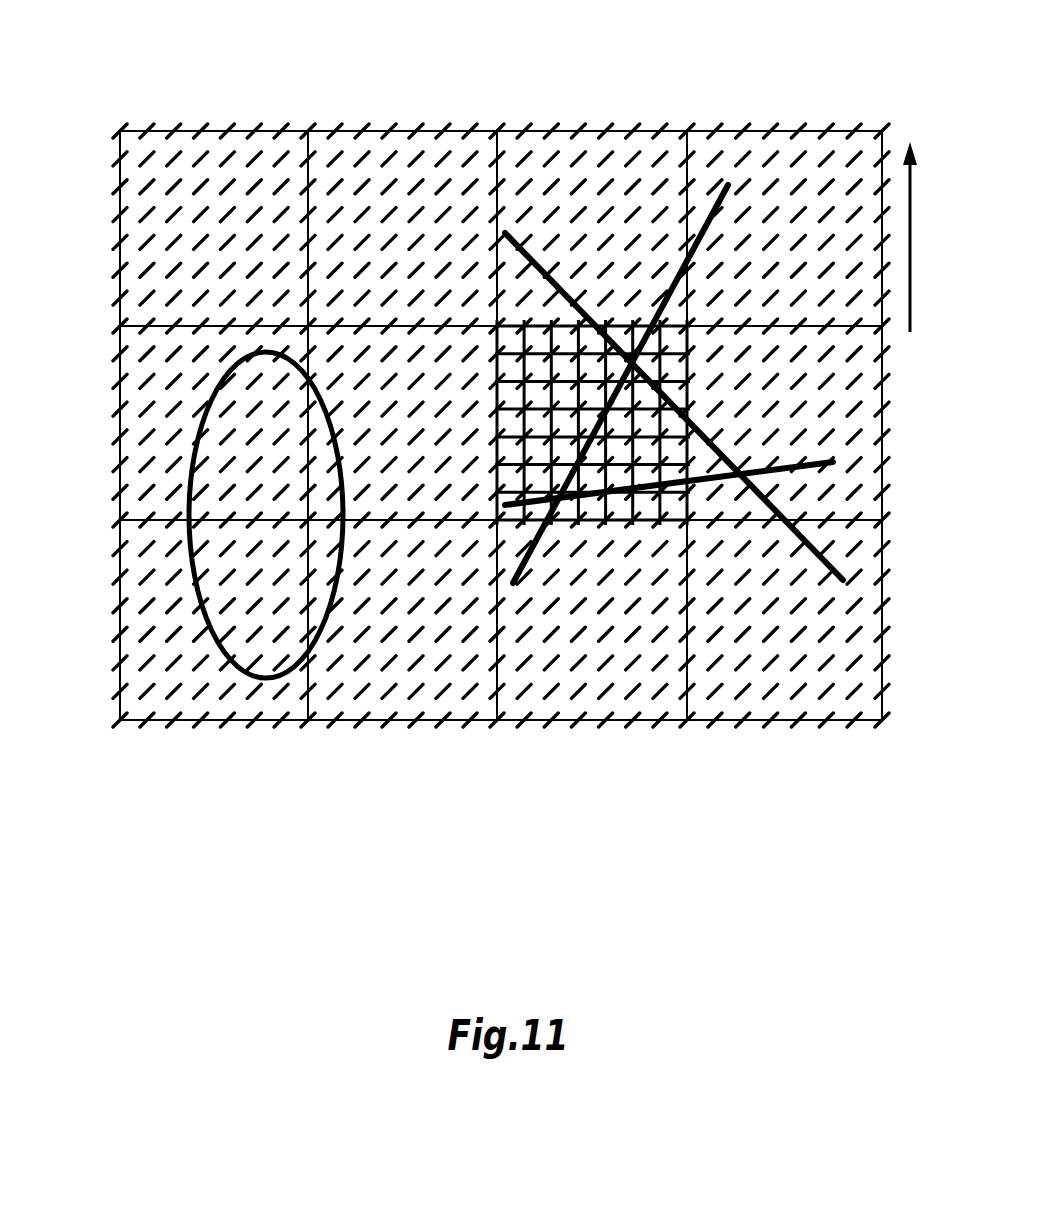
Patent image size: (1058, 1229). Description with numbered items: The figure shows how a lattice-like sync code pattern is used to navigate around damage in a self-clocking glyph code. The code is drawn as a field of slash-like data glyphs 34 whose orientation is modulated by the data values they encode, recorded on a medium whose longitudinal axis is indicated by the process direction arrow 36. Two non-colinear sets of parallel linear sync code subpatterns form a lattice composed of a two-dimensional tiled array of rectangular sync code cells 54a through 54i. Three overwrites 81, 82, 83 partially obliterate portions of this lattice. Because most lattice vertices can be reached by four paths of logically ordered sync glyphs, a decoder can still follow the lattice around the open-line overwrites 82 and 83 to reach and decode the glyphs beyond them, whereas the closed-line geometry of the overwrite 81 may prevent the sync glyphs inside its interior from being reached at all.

The data glyphs 34 is at (227, 153).
The process direction arrow 36 is at (908, 192).
The sync code cell 54a is at (108, 216).
The sync code cell 54i is at (788, 732).
The overwrite 81 is at (187, 455).
The overwrite 82 is at (623, 327).
The overwrite 83 is at (823, 457).